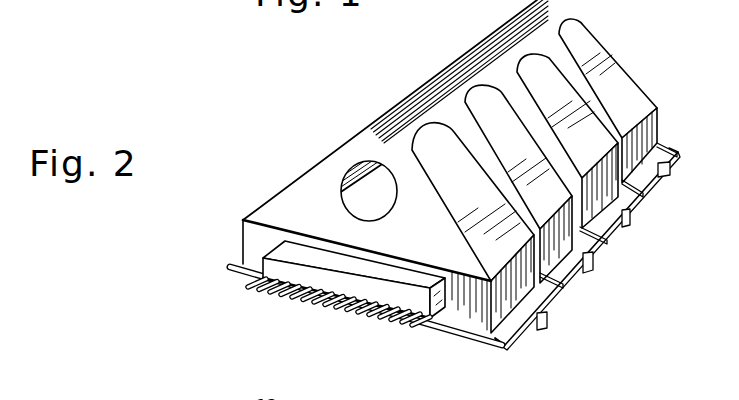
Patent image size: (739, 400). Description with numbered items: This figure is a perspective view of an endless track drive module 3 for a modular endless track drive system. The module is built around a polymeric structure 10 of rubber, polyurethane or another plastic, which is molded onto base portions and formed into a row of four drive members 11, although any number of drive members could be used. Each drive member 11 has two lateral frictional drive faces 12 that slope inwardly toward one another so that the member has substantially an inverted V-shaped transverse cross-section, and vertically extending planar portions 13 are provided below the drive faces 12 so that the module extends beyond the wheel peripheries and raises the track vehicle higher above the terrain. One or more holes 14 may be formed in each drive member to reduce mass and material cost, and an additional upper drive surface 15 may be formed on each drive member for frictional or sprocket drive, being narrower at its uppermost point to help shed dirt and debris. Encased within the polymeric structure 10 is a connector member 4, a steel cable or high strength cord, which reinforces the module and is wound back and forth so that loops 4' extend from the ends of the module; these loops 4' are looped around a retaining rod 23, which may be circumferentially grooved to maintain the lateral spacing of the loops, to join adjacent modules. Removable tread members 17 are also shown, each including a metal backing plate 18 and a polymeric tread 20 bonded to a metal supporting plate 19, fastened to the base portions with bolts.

The endless track drive module 3 is at (456, 200).
The connector member 4 is at (165, 389).
The connector member loops 4' is at (366, 317).
The polymeric structure 10 is at (281, 190).
The drive members 11 is at (369, 120).
The drive faces 12 is at (449, 172).
The vertically extending planar portions 13 is at (550, 10).
The holes 14 is at (343, 196).
The upper drive surface 15 is at (209, 399).
The tread members 17 is at (555, 323).
The metal backing plate 18 is at (584, 245).
The metal supporting plate 19 is at (552, 307).
The polymeric tread 20 is at (537, 337).
The retaining rod 23 is at (405, 338).